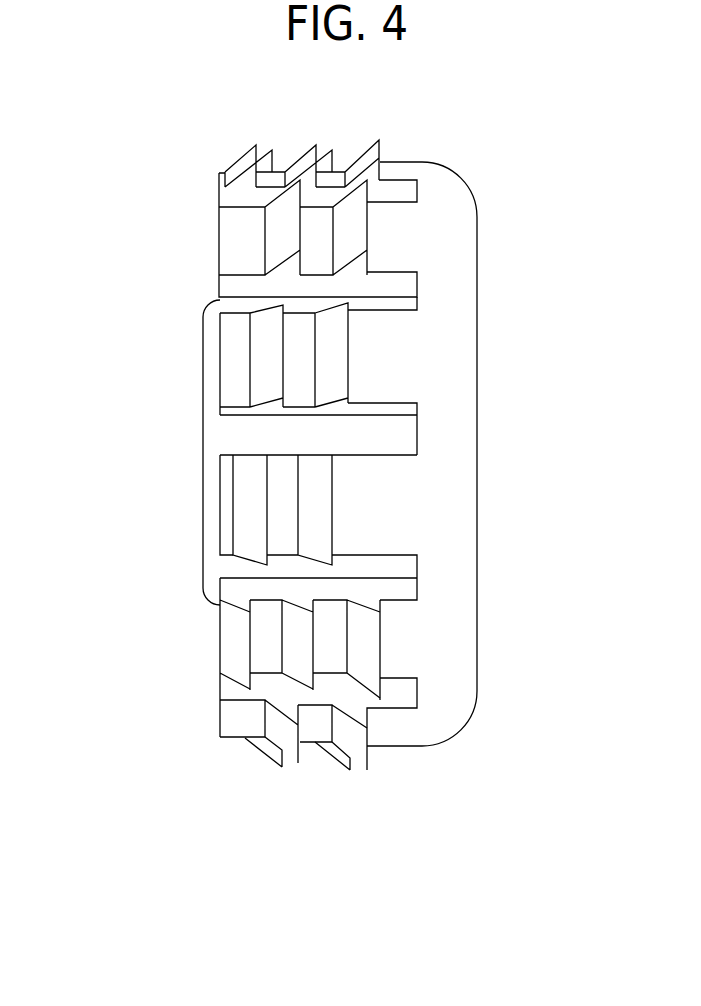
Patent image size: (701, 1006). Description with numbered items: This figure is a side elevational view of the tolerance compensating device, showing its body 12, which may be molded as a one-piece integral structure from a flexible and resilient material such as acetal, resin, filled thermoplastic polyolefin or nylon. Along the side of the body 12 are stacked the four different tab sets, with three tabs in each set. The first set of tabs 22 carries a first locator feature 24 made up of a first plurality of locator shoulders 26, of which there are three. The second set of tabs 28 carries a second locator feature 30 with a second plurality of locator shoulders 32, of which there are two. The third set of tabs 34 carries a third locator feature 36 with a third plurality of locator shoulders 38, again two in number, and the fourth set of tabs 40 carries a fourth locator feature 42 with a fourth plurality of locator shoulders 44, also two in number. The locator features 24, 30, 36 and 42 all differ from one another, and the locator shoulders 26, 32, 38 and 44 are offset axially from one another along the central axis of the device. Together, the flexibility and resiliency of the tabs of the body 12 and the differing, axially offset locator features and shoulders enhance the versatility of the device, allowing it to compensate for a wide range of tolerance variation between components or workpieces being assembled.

The body 12 is at (453, 741).
The first set of tabs 22 is at (390, 627).
The first locator feature 24 is at (207, 643).
The first plurality of locator shoulders 26 is at (238, 633).
The second set of tabs 28 is at (238, 227).
The second locator feature 30 is at (385, 235).
The second plurality of locator shoulders 32 is at (347, 233).
The third set of tabs 34 is at (363, 352).
The third locator feature 36 is at (362, 378).
The third plurality of locator shoulders 38 is at (332, 358).
The fourth set of tabs 40 is at (225, 490).
The fourth locator feature 42 is at (195, 535).
The fourth plurality of locator shoulders 44 is at (252, 502).